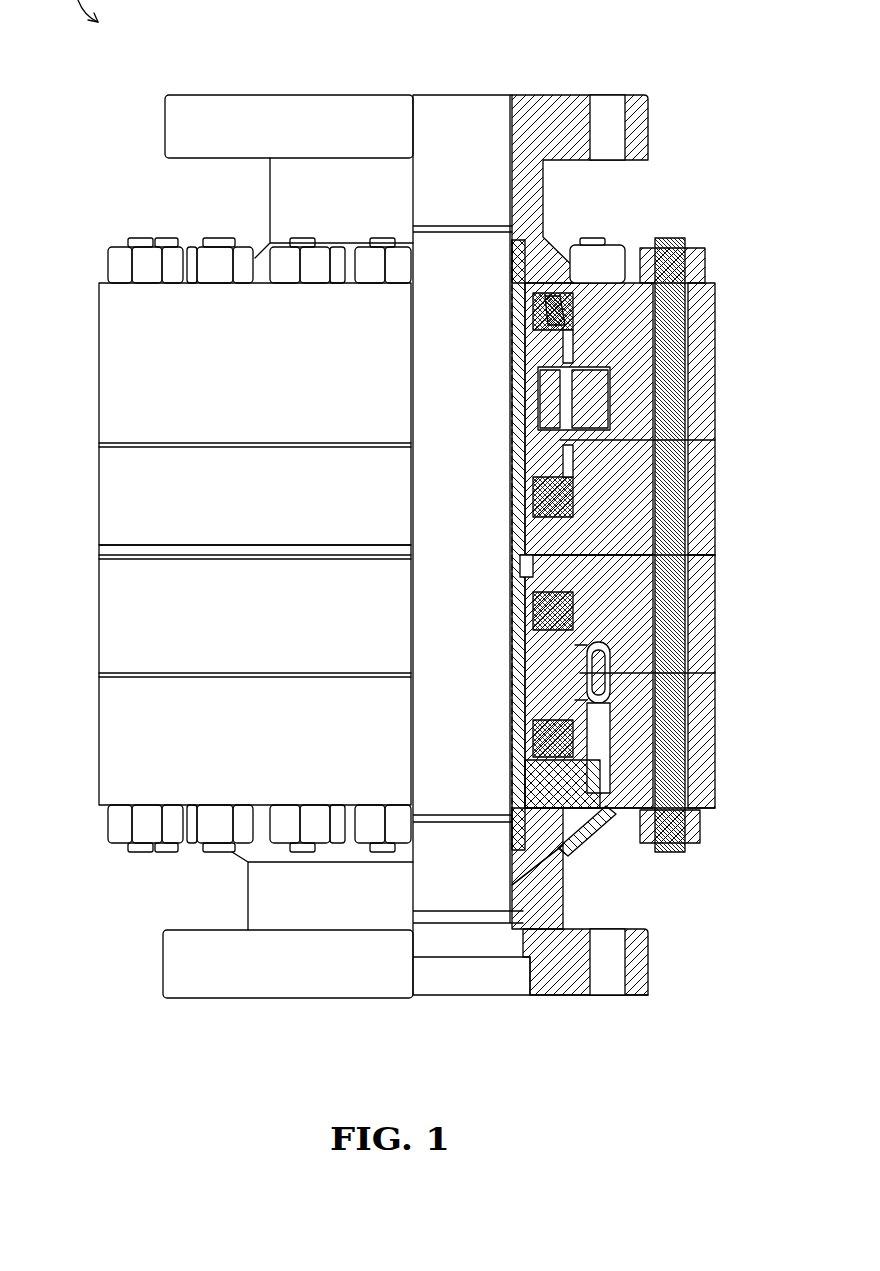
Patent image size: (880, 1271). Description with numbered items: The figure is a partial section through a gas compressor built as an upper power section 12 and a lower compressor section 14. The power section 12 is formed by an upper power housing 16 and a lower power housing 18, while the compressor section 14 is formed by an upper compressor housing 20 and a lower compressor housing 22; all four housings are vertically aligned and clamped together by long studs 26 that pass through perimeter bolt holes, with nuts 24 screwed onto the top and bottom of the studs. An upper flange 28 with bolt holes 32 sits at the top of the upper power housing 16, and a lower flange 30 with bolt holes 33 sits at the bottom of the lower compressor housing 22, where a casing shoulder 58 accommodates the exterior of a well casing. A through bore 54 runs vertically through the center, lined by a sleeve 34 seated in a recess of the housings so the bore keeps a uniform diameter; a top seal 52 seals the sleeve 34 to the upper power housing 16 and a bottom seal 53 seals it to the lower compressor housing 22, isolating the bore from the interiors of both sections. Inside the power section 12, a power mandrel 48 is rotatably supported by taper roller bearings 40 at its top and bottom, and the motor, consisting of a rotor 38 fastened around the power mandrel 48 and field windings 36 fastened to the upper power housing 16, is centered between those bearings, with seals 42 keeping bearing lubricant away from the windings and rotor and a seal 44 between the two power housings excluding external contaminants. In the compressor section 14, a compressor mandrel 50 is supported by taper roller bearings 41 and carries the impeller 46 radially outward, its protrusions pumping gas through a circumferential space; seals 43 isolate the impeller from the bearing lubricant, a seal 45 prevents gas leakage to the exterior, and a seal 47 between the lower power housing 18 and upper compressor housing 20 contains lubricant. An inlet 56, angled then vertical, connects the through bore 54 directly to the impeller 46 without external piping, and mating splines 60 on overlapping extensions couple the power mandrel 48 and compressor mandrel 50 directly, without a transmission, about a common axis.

The power section 12 is at (55, 92).
The compressor section 14 is at (55, 565).
The upper power housing 16 is at (640, 380).
The lower power housing 18 is at (700, 505).
The upper compressor housing 20 is at (640, 572).
The lower compressor housing 22 is at (700, 760).
The nuts 24 is at (690, 258).
The long studs 26 is at (600, 246).
The upper flange 28 is at (620, 152).
The lower flange 30 is at (620, 950).
The bolt holes 32 is at (612, 170).
The bolt holes 33 is at (560, 948).
The sleeve 34 is at (565, 790).
The field windings 36 is at (592, 385).
The rotor 38 is at (600, 405).
The taper roller bearings 40 is at (555, 305).
The taper roller bearings 41 is at (555, 612).
The seals 42 is at (568, 345).
The seals 43 is at (598, 645).
The seal 44 is at (640, 440).
The seal 45 is at (600, 660).
The impeller 46 is at (600, 684).
The seal 47 is at (650, 545).
The power mandrel 48 is at (548, 320).
The compressor mandrel 50 is at (600, 740).
The top seal 52 is at (522, 248).
The bottom seal 53 is at (595, 800).
The through bore 54 is at (464, 92).
The inlet 56 is at (590, 835).
The casing shoulder 58 is at (560, 888).
The mating splines 60 is at (532, 566).